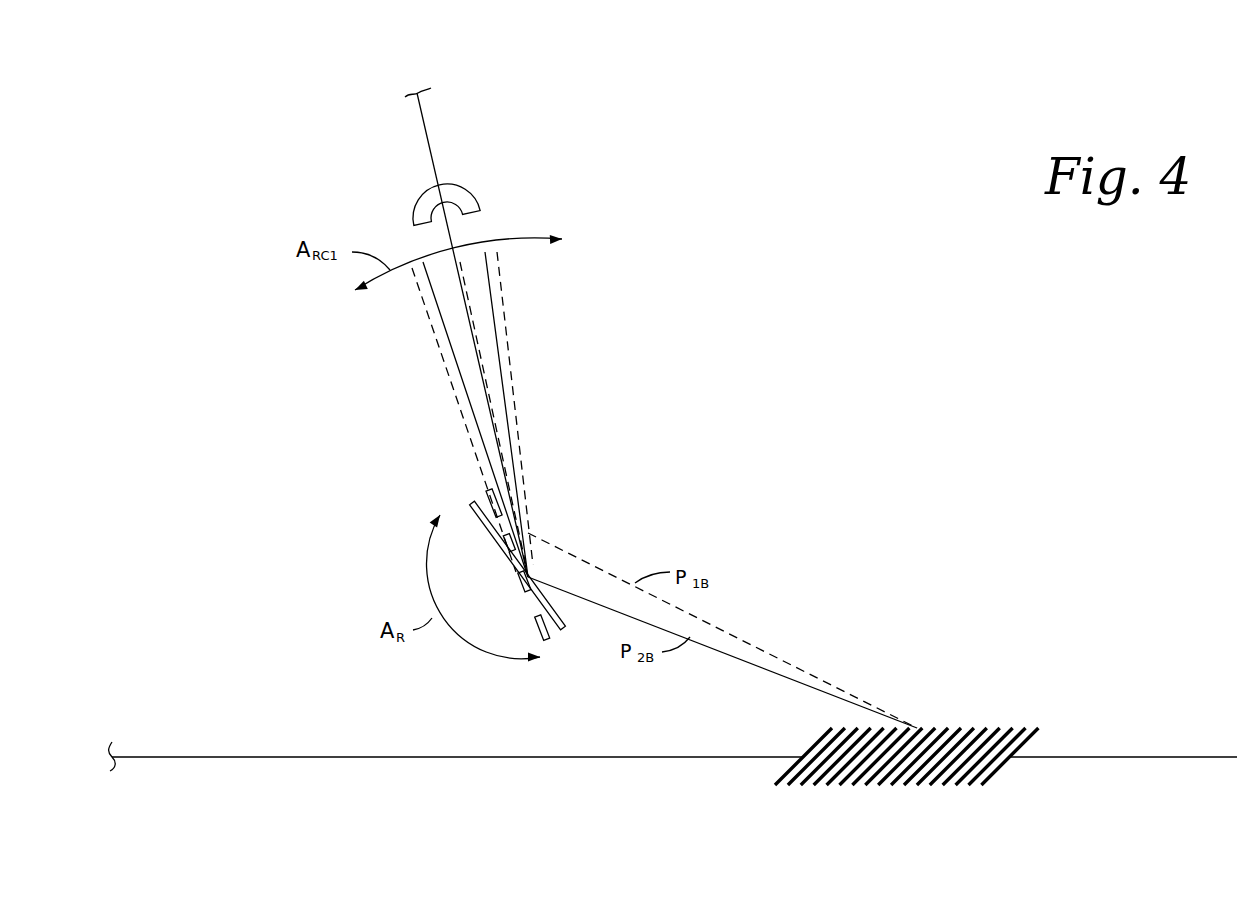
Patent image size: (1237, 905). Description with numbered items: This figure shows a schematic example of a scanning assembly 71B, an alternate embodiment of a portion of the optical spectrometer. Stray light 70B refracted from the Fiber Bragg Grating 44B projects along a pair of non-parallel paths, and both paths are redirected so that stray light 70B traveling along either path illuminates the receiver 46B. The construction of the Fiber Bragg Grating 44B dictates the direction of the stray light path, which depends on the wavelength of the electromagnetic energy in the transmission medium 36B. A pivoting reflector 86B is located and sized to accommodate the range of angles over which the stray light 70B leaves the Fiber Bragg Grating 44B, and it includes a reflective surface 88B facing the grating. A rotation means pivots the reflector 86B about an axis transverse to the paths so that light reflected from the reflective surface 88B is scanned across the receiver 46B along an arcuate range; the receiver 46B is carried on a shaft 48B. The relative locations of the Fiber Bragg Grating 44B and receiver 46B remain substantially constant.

The transmission medium 36B is at (240, 724).
The Fiber Bragg Grating 44B is at (1045, 680).
The receiver 46B is at (496, 170).
The rotation axis shaft 48B is at (423, 118).
The stray light 70B is at (788, 592).
The scanning assembly 71B is at (878, 384).
The pivoting reflector 86B is at (437, 480).
The reflective surface 88B is at (504, 516).